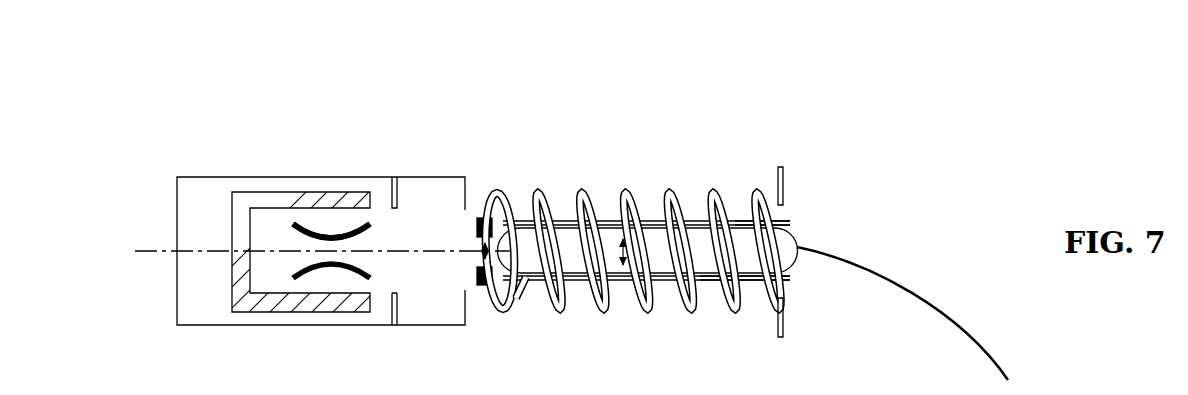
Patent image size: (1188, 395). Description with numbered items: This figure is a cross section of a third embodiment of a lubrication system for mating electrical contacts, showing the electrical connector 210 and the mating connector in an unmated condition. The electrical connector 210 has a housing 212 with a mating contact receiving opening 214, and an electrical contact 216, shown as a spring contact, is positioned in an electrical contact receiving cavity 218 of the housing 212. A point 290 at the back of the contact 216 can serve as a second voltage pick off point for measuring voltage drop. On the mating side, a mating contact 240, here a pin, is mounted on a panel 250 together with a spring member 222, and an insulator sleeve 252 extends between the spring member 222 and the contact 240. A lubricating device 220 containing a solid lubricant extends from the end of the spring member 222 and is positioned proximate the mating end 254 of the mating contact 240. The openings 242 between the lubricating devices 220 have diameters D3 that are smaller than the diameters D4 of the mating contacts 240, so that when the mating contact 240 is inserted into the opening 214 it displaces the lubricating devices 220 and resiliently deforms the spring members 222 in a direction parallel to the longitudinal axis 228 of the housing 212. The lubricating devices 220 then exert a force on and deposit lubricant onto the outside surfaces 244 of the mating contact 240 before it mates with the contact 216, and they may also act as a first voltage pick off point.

The electrical connector 210 is at (350, 92).
The housing 212 is at (360, 177).
The mating contact receiving opening 214 is at (445, 265).
The electrical contact 216 is at (331, 236).
The electrical contact receiving cavity 218 is at (340, 288).
The lubricating device 220 is at (488, 218).
The spring member 222 is at (678, 205).
The longitudinal axis 228 is at (152, 253).
The mating contact 240 is at (800, 238).
The opening 242 is at (473, 243).
The outside surface 244 is at (710, 284).
The panel 250 is at (786, 322).
The insulator sleeve 252 is at (737, 218).
The mating end 254 is at (508, 244).
The point 290 is at (294, 224).
The diameter of the opening D3 is at (496, 249).
The diameter of the mating contact D4 is at (625, 268).